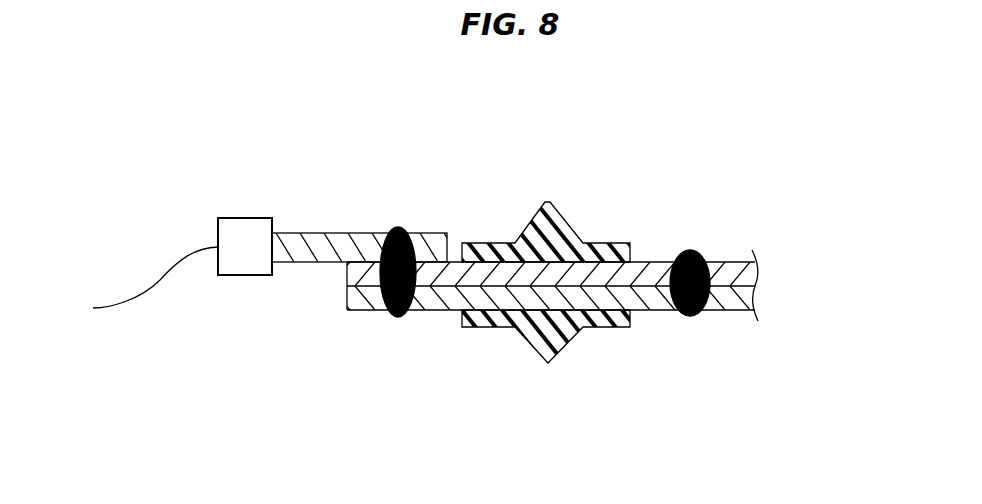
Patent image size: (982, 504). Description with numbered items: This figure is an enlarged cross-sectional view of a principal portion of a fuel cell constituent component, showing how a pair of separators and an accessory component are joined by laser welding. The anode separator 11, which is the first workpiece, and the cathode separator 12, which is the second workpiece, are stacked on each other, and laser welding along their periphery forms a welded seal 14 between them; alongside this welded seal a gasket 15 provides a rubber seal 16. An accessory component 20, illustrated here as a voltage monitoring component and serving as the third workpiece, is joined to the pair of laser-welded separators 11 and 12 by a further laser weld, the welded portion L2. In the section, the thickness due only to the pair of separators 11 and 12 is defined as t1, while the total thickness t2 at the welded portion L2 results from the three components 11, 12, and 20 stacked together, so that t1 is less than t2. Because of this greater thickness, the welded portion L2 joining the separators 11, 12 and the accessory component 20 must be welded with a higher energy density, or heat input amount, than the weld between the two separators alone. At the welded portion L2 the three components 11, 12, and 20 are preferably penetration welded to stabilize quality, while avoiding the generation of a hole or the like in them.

The anode separator 11 is at (756, 272).
The cathode separator 12 is at (756, 289).
The welded seal 14 is at (691, 250).
The gasket 15 is at (570, 282).
The rubber seal 16 is at (548, 203).
The accessory component 20 is at (310, 232).
The welded portion of the separators and the accessory component L2 is at (400, 218).
The thickness due to the pair of separators t1 is at (740, 183).
The total thickness due to the three components t2 is at (362, 157).